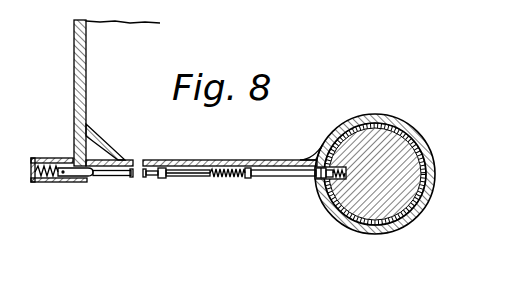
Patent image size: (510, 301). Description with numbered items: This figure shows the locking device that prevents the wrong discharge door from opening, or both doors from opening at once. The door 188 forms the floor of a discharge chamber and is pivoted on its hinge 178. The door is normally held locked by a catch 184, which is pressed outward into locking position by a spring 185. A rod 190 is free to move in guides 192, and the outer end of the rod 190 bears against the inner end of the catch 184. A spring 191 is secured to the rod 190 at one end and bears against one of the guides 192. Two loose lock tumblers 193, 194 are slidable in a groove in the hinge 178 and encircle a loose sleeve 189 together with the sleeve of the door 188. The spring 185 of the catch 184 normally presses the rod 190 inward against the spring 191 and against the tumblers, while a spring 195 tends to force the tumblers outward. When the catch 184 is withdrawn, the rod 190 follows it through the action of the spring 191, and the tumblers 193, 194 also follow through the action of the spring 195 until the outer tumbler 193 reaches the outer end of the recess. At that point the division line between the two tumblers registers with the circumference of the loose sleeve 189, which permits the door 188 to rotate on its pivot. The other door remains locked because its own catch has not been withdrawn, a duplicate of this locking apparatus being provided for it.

The hinge 178 is at (378, 195).
The catch 184 is at (84, 183).
The spring 185 is at (48, 182).
The door 188 is at (135, 161).
The loose sleeve 189 is at (416, 210).
The rod 190 is at (147, 178).
The spring 191 is at (213, 178).
The guides 192 is at (243, 178).
The outer lock tumbler 193 is at (318, 186).
The lock tumbler 194 is at (333, 180).
The spring 195 is at (344, 179).